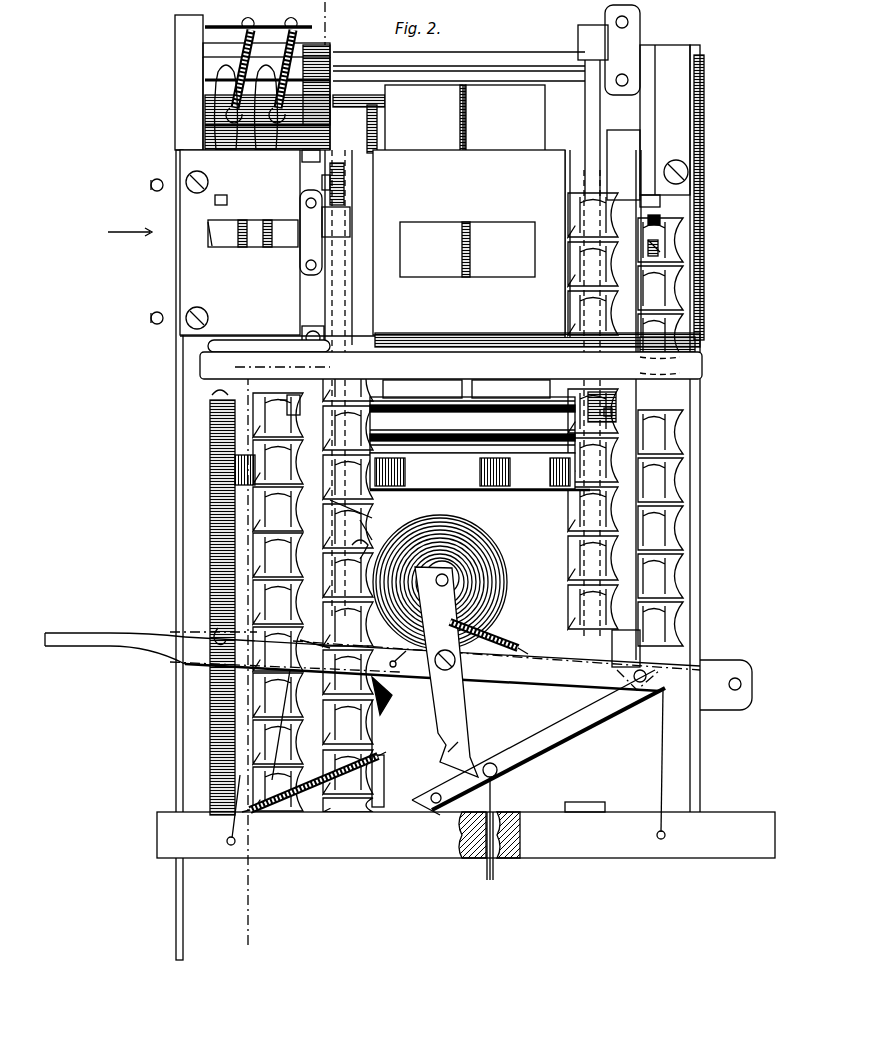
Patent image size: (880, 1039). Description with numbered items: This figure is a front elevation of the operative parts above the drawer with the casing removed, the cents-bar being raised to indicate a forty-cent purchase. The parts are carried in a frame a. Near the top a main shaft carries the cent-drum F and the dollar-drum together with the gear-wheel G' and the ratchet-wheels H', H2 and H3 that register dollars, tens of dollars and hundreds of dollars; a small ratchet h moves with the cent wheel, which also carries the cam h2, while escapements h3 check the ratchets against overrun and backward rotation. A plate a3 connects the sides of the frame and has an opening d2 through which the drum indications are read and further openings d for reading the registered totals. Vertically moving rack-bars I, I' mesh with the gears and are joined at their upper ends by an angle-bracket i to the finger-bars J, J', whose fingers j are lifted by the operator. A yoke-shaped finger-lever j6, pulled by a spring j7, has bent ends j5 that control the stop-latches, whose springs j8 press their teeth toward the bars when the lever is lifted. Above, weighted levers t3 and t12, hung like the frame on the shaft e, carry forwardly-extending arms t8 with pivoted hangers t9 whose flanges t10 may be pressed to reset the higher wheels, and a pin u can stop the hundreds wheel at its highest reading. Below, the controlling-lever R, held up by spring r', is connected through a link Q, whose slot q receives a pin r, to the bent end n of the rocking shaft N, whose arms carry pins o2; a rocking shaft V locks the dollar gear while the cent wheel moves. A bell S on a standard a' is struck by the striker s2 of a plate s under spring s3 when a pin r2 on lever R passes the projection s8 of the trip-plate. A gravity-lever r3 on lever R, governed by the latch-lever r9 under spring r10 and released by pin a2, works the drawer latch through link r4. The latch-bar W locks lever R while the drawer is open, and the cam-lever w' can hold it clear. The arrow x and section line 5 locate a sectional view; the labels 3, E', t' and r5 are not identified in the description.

The frame a is at (456, 487).
The section line 5 is at (248, 658).
The section line 3 is at (319, 22).
The finger-bar J is at (495, 481).
The fingers or handles j is at (575, 523).
The latch springs j8 is at (678, 530).
The link Q is at (292, 628).
The bent portion n is at (286, 420).
The weighted lever t12 is at (205, 64).
The weighted lever t3 is at (265, 43).
The forwardly-extending arms t8 is at (303, 55).
The pivoted hangers t9 is at (225, 128).
The extended flanges t10 is at (253, 175).
The gear-wheel G' is at (335, 167).
The escapements h3 is at (315, 147).
The cent-drum F is at (367, 120).
The shaft e is at (370, 63).
The angle-bracket i is at (609, 102).
The ratchet h is at (665, 132).
The cam h2 is at (663, 226).
The spring j7 is at (706, 228).
The price display E' is at (477, 243).
The plate a3 is at (372, 242).
The opening d2 is at (400, 272).
The ratchet-wheel H2 is at (253, 241).
The ratchet-wheel H' is at (313, 270).
The ratchet-wheel H3 is at (212, 222).
The register-opening d is at (212, 248).
The arrow x is at (135, 233).
The pin u is at (153, 186).
The cam-lever w' is at (152, 309).
The lever ends j5 is at (208, 346).
The finger-lever j6 is at (730, 342).
The latch-bar W is at (177, 374).
The rocking shaft V is at (404, 413).
The rocking shaft N is at (480, 449).
The block t' is at (612, 406).
The pins o2 is at (614, 413).
The bell S is at (440, 582).
The pin a2 is at (452, 585).
The standard a' is at (427, 672).
The bell-striker s2 is at (360, 562).
The spring r10 is at (500, 636).
The pin r2 is at (399, 656).
The gravity-lever r3 is at (538, 742).
The link r4 is at (493, 802).
The spring r' is at (329, 730).
The latch-lever r9 is at (554, 764).
The pin r5 is at (456, 743).
The controlling-lever R is at (281, 651).
The pin r is at (314, 726).
The slot q is at (285, 692).
The projecting part s8 is at (392, 696).
The plate s is at (381, 730).
The spring s3 is at (385, 760).
The finger-bar J' is at (362, 506).
The rack-bar I' is at (388, 524).
The rack-bar I is at (561, 498).